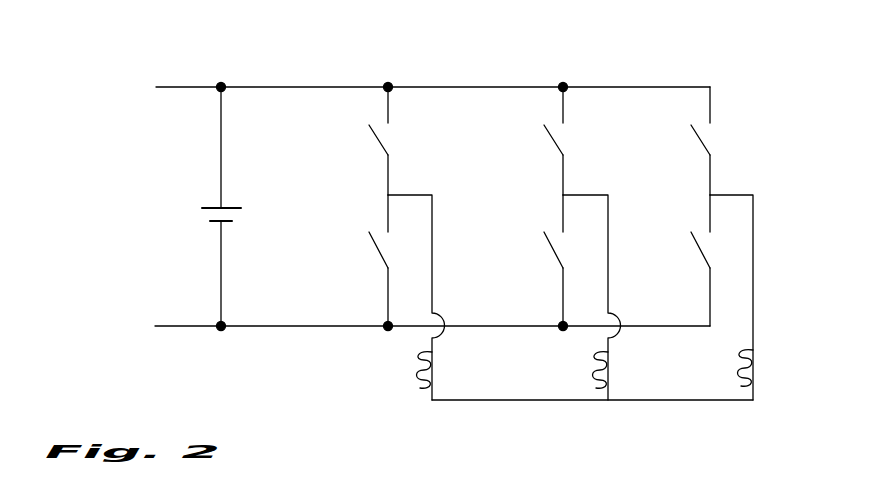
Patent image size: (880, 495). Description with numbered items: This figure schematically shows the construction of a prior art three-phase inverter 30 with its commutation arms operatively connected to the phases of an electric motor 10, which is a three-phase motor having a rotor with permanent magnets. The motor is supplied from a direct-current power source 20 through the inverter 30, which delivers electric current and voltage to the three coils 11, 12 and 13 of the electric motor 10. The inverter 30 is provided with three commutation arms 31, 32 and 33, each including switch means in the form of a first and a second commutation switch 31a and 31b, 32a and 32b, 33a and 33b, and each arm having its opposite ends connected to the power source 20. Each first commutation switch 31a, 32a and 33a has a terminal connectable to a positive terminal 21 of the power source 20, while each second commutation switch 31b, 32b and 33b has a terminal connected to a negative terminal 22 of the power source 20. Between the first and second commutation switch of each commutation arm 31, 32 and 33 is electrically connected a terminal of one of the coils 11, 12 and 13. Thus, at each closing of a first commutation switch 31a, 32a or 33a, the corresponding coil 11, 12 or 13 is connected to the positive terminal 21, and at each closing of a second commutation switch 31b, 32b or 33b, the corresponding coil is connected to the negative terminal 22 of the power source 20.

The electric motor 10 is at (746, 410).
The coil 11 is at (408, 375).
The coil 12 is at (583, 372).
The coil 13 is at (728, 371).
The power source 20 is at (182, 216).
The positive terminal 21 is at (221, 86).
The negative terminal 22 is at (221, 333).
The inverter 30 is at (648, 69).
The commutation arm 31 is at (361, 207).
The first commutation switch 31a is at (383, 150).
The second commutation switch 31b is at (377, 247).
The commutation arm 32 is at (550, 207).
The first commutation switch 32a is at (560, 147).
The second commutation switch 32b is at (550, 248).
The commutation arm 33 is at (702, 206).
The first commutation switch 33a is at (703, 142).
The second commutation switch 33b is at (700, 248).